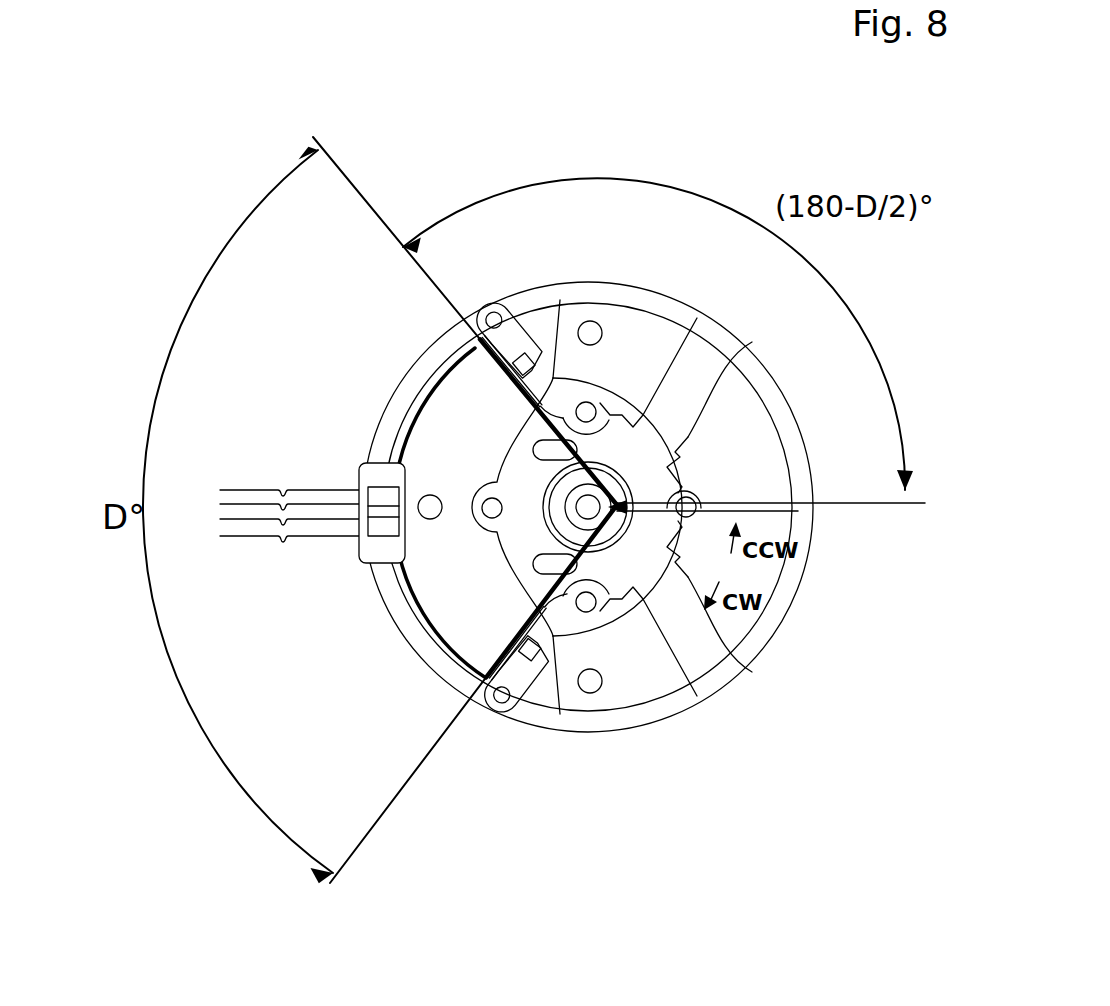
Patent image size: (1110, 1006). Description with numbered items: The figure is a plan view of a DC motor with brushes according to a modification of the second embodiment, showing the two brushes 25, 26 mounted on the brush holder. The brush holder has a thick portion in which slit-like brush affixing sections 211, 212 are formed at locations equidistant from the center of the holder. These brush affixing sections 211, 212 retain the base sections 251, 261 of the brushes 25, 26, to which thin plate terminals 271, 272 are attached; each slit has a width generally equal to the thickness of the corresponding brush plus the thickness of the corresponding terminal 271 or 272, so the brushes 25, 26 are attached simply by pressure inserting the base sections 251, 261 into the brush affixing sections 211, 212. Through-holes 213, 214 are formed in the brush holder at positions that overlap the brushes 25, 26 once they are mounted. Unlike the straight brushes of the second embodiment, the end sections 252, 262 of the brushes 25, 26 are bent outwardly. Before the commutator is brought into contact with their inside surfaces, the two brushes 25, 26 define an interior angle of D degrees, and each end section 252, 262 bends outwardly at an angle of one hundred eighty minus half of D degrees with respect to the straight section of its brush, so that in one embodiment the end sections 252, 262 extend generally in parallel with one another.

The brush 25 is at (610, 385).
The brush 26 is at (600, 627).
The brush affixing section 211 is at (494, 387).
The brush affixing section 212 is at (494, 632).
The through-hole 213 is at (695, 312).
The through-hole 214 is at (623, 540).
The base section 251 is at (560, 300).
The end section 252 is at (752, 342).
The base section 261 is at (568, 630).
The end section 262 is at (650, 605).
The terminal 271 is at (477, 347).
The terminal 272 is at (545, 675).